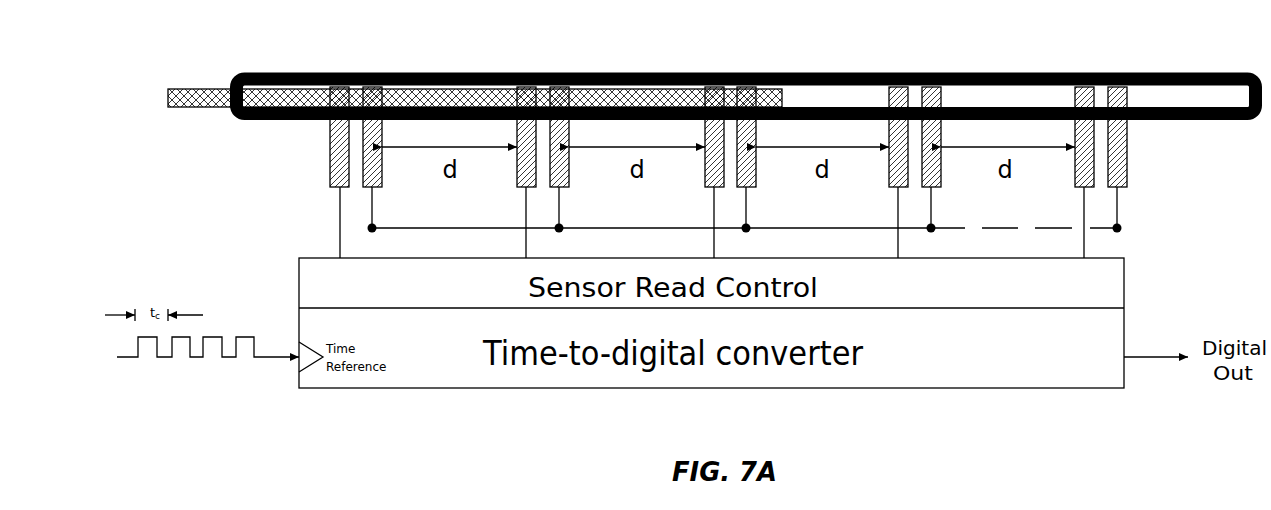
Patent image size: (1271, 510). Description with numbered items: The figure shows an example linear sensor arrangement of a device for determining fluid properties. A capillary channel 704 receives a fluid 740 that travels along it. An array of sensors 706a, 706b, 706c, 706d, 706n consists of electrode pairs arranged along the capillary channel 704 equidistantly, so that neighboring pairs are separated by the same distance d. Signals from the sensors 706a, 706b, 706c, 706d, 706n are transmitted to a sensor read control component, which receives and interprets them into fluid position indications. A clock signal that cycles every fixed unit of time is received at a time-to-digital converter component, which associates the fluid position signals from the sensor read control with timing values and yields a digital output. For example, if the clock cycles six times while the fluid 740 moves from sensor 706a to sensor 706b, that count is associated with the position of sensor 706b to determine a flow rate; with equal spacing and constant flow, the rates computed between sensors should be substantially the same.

The capillary channel 704 is at (257, 72).
The fluid 740 is at (181, 89).
The sensor 706a is at (356, 139).
The sensor 706b is at (542, 139).
The sensor 706c is at (730, 139).
The sensor 706d is at (915, 139).
The sensor 706n is at (1101, 139).